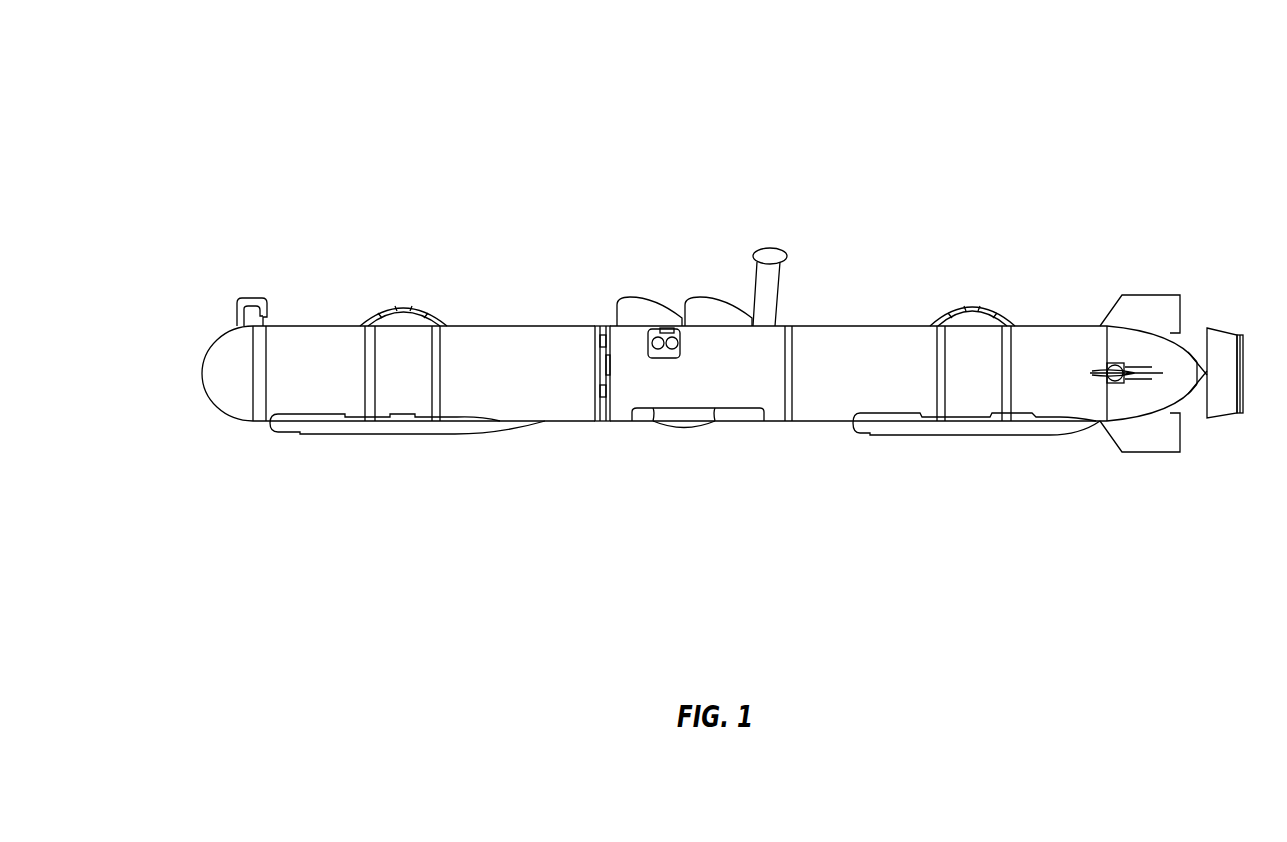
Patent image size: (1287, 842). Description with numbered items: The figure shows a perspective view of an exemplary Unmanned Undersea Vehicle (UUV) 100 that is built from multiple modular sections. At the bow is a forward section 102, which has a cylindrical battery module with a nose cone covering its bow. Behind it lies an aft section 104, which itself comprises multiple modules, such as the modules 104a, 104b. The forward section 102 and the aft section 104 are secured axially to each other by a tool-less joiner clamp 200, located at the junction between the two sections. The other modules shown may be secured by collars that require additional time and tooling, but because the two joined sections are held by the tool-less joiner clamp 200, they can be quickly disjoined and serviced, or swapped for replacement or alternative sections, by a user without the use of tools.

The Unmanned Undersea Vehicle (UUV) 100 is at (245, 609).
The forward section 102 is at (587, 253).
The aft section 104 is at (1252, 218).
The module 104a is at (706, 446).
The module 104b is at (977, 446).
The tool-less joiner clamp 200 is at (601, 422).